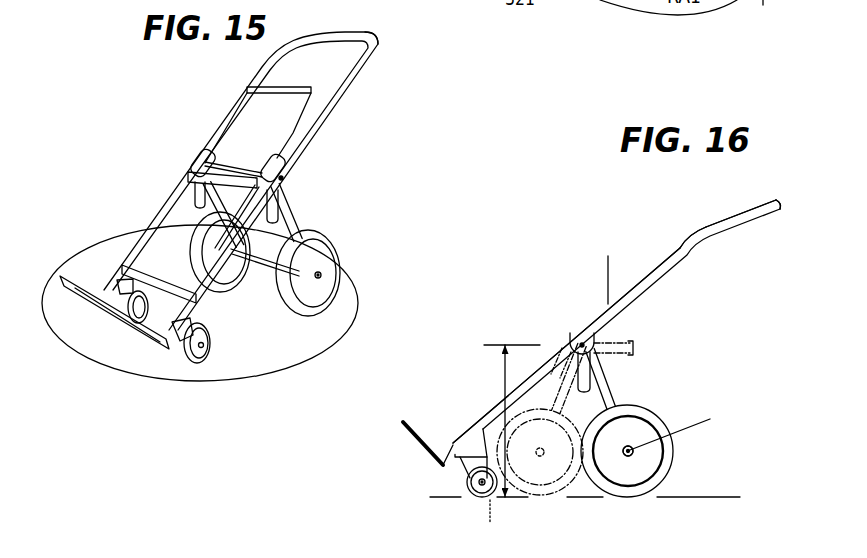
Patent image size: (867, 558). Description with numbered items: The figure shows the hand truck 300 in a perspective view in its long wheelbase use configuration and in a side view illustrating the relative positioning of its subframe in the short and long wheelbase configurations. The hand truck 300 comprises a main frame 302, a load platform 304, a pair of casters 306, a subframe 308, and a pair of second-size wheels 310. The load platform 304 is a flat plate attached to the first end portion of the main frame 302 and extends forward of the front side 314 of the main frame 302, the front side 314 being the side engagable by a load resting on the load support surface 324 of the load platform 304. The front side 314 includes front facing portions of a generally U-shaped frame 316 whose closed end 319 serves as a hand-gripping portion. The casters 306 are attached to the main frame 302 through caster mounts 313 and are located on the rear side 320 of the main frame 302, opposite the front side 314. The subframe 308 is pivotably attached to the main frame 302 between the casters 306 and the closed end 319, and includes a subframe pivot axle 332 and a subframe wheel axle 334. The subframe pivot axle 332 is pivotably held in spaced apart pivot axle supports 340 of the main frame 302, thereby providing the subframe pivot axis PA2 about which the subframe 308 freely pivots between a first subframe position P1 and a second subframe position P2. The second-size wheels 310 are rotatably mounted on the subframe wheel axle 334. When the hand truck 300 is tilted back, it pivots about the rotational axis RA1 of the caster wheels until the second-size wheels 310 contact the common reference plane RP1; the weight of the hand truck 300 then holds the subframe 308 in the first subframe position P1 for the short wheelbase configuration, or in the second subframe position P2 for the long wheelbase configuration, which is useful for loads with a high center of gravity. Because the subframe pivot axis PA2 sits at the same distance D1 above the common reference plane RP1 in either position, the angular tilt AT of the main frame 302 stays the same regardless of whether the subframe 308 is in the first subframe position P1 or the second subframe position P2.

In FIG. 15, the hand truck 300 is at (257, 169).
In FIG. 16, the hand truck 300 is at (635, 312).
In FIG. 15, the main frame 302 is at (345, 68).
In FIG. 16, the main frame 302 is at (727, 226).
In FIG. 15, the load platform 304 is at (85, 277).
In FIG. 16, the load platform 304 is at (425, 446).
In FIG. 15, the casters 306 is at (182, 356).
In FIG. 16, the casters 306 is at (464, 483).
In FIG. 15, the subframe 308 is at (283, 205).
In FIG. 16, the subframe 308 is at (603, 385).
In FIG. 15, the second-size wheels 310 is at (342, 256).
In FIG. 16, the second-size wheels 310 is at (664, 483).
In FIG. 15, the caster mounts 313 is at (216, 337).
In FIG. 16, the caster mounts 313 is at (478, 440).
In FIG. 16, the front side 314 is at (652, 250).
In FIG. 16, the generally U-shaped frame 316 is at (678, 221).
In FIG. 15, the closed end 319 is at (357, 33).
In FIG. 16, the closed end 319 is at (775, 206).
In FIG. 16, the rear side 320 is at (673, 267).
In FIG. 16, the load support surface 324 is at (405, 421).
In FIG. 15, the subframe pivot axle 332 is at (250, 166).
In FIG. 16, the subframe pivot axle 332 is at (572, 344).
In FIG. 15, the subframe wheel axle 334 is at (265, 280).
In FIG. 16, the subframe wheel axle 334 is at (675, 440).
In FIG. 15, the pivot axle supports 340 is at (195, 164).
In FIG. 16, the pivot axle supports 340 is at (577, 333).
In FIG. 16, the angular tilt AT is at (633, 276).
In FIG. 16, the distance D1 is at (505, 497).
In FIG. 16, the first subframe position P1 is at (636, 346).
In FIG. 15, the second subframe position P2 is at (354, 208).
In FIG. 16, the second subframe position P2 is at (661, 387).
In FIG. 15, the subframe pivot axis PA2 is at (292, 182).
In FIG. 16, the subframe pivot axis PA2 is at (558, 348).
In FIG. 16, the rotational axis RA1 is at (666, 437).
In FIG. 15, the common reference plane RP1 is at (350, 322).
In FIG. 16, the common reference plane RP1 is at (733, 497).